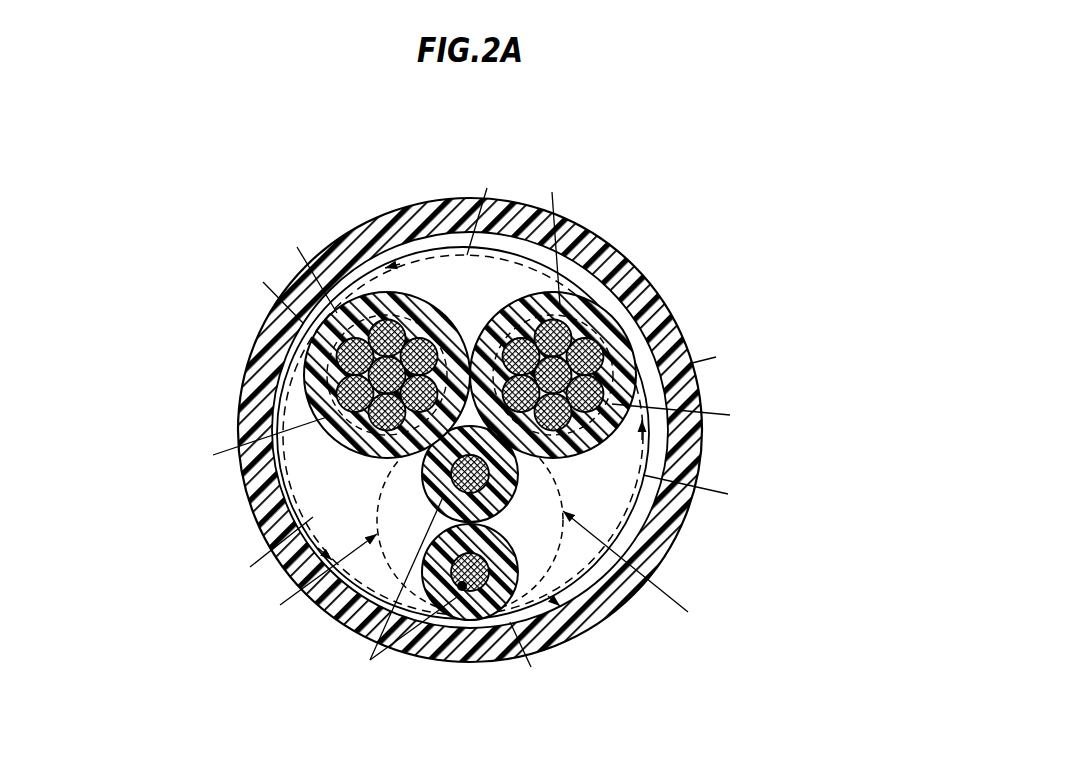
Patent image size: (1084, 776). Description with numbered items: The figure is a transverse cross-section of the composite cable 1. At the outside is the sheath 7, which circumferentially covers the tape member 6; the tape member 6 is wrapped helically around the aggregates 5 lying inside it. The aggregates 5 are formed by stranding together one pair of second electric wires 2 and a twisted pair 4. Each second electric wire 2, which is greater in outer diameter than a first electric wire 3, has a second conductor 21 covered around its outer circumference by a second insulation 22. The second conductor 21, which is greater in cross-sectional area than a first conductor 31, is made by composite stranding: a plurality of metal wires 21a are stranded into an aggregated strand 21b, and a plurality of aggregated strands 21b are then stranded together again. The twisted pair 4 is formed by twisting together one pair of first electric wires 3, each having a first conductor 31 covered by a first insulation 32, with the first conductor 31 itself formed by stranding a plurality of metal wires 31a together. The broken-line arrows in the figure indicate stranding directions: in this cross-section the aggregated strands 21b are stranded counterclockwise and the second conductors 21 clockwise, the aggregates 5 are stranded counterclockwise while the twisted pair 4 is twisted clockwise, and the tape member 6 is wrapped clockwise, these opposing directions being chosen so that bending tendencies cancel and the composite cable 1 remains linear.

The composite cable 1 is at (315, 202).
The second electric wire 2 is at (570, 317).
The second conductor 21 is at (633, 318).
The metal wire 21a is at (602, 350).
The aggregated strand 21b is at (612, 345).
The second insulation 22 is at (630, 360).
The first electric wire 3 is at (512, 593).
The first conductor 31 is at (474, 600).
The metal wire 31a is at (342, 654).
The first insulation 32 is at (496, 607).
The twisted pair 4 is at (512, 593).
The aggregate 5 is at (603, 485).
The tape member 6 is at (660, 435).
The sheath 7 is at (683, 392).